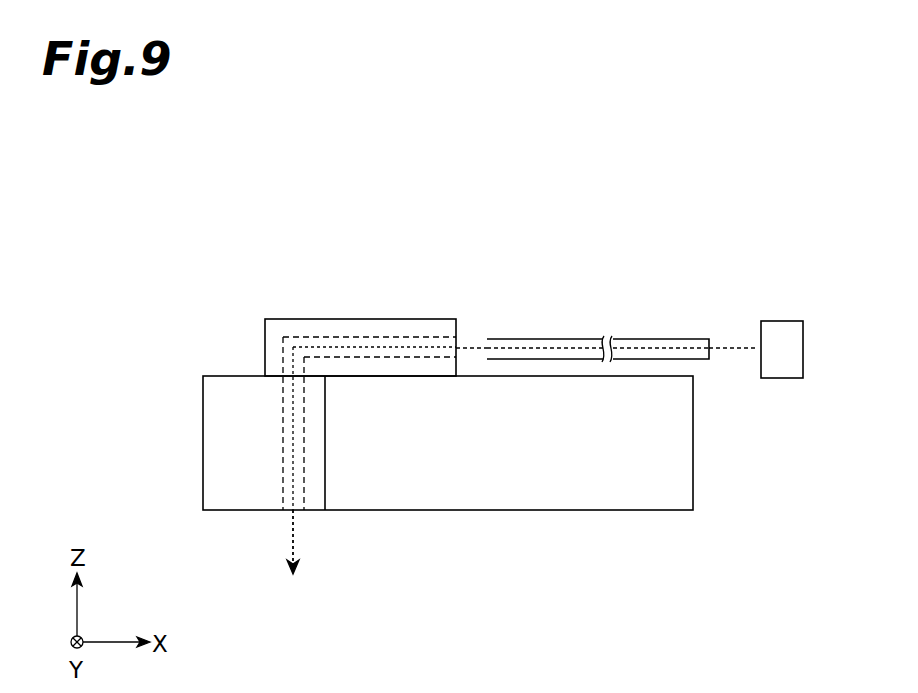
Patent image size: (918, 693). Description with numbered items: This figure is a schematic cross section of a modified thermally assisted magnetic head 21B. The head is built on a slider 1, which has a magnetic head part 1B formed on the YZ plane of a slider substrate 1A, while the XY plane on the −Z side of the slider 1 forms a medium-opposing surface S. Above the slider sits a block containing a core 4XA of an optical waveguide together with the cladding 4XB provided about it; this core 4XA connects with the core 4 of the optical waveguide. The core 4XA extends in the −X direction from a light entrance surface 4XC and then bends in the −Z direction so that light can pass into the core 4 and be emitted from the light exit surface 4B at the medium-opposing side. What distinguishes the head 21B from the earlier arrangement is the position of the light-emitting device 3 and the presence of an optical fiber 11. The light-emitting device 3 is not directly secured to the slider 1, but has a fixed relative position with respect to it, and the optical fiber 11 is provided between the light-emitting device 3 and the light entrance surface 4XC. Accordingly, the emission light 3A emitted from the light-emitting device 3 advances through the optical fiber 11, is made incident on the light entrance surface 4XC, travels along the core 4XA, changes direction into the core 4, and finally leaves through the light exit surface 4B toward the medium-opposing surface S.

The thermally assisted magnetic head 21B is at (667, 192).
The medium-opposing surface S is at (622, 511).
The slider 1 is at (448, 596).
The slider substrate 1A is at (420, 466).
The magnetic head part 1B is at (313, 511).
The core of the optical waveguide 4 is at (404, 260).
The core of the optical waveguide 4XA is at (378, 335).
The cladding 4XB is at (338, 367).
The light entrance surface 4XC is at (457, 348).
The light exit surface 4B is at (288, 520).
The optical fiber 11 is at (637, 340).
The emission light 3A is at (728, 343).
The light-emitting device 3 is at (787, 331).